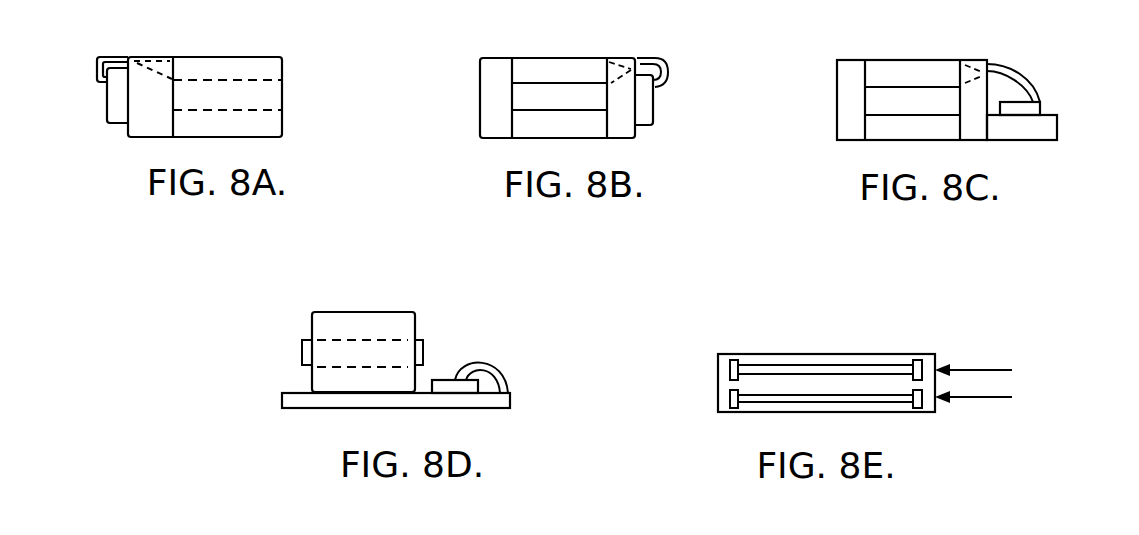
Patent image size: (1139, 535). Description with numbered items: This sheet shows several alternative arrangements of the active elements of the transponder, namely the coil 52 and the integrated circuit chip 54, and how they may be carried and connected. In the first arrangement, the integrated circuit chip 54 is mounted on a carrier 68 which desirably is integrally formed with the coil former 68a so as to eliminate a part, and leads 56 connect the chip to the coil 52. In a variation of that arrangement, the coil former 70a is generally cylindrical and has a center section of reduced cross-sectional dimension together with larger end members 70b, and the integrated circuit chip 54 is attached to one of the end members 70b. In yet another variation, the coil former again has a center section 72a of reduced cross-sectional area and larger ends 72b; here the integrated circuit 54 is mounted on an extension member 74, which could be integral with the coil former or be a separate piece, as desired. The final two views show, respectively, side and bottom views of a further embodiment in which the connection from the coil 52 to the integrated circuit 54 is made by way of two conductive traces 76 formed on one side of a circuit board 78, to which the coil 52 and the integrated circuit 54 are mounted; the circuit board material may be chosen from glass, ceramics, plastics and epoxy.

In FIG. 8A, the coil 52 is at (266, 125).
In FIG. 8B, the coil 52 is at (563, 57).
In FIG. 8C, the coil 52 is at (892, 133).
In FIG. 8D, the coil 52 is at (397, 323).
In FIG. 8A, the integrated circuit chip 54 is at (120, 118).
In FIG. 8B, the integrated circuit chip 54 is at (657, 110).
In FIG. 8C, the integrated circuit chip 54 is at (1042, 107).
In FIG. 8D, the integrated circuit chip 54 is at (445, 380).
In FIG. 8A, the leads 56 is at (97, 62).
In FIG. 8A, the carrier 68 is at (160, 64).
In FIG. 8A, the coil former 68a is at (228, 79).
In FIG. 8B, the coil former 70a is at (530, 98).
In FIG. 8B, the end members 70b is at (490, 117).
In FIG. 8C, the center section 72a is at (903, 87).
In FIG. 8C, the ends 72b is at (848, 68).
In FIG. 8C, the extension member 74 is at (1057, 133).
In FIG. 8E, the conductive traces 76 is at (843, 397).
In FIG. 8D, the circuit board 78 is at (333, 402).
In FIG. 8E, the circuit board 78 is at (755, 360).